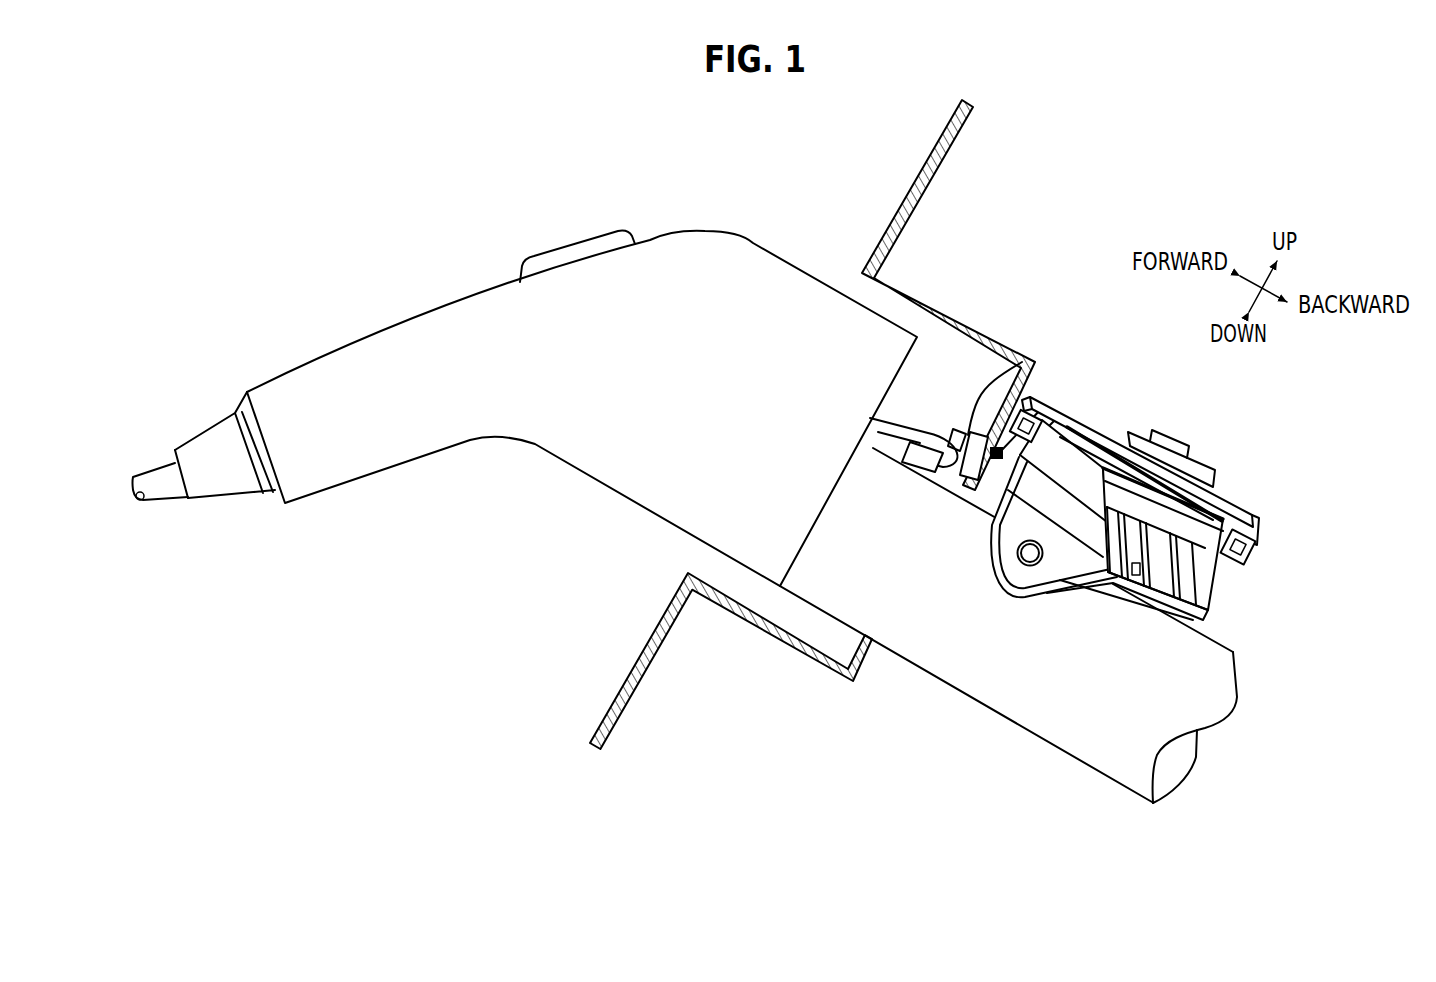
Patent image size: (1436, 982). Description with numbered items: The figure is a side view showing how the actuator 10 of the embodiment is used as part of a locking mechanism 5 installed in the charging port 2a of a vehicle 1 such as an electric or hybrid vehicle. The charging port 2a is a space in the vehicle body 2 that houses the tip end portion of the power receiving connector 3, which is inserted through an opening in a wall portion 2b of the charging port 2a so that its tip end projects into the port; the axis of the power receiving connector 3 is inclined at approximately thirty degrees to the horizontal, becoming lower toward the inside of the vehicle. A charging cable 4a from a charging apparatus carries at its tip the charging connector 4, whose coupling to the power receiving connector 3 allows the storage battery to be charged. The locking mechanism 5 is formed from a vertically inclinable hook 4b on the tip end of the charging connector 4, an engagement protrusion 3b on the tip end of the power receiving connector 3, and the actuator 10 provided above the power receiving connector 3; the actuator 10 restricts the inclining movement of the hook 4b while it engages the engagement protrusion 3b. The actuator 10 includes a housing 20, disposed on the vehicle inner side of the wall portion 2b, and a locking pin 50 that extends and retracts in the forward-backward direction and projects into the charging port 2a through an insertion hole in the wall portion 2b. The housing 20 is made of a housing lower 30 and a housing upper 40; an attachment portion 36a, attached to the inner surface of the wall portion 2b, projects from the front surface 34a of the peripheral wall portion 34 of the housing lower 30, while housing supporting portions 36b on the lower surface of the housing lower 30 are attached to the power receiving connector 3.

The vehicle 1 is at (812, 419).
The vehicle body 2 is at (812, 424).
The charging port 2a is at (732, 655).
The wall portion 2b is at (872, 665).
The power receiving connector 3 is at (1044, 584).
The engagement protrusion 3b is at (925, 447).
The charging connector 4 is at (643, 516).
The charging cable 4a is at (158, 488).
The hook 4b is at (958, 436).
The locking mechanism 5 is at (1118, 483).
The actuator 10 is at (1196, 447).
The housing 20 is at (1266, 528).
The housing lower 30 is at (1208, 592).
The peripheral wall portion 34 is at (1177, 582).
The front surface 34a is at (993, 545).
The attachment portion 36a is at (987, 468).
The housing supporting portions 36b is at (1020, 574).
The housing upper 40 is at (1212, 512).
The locking pin 50 is at (1008, 378).